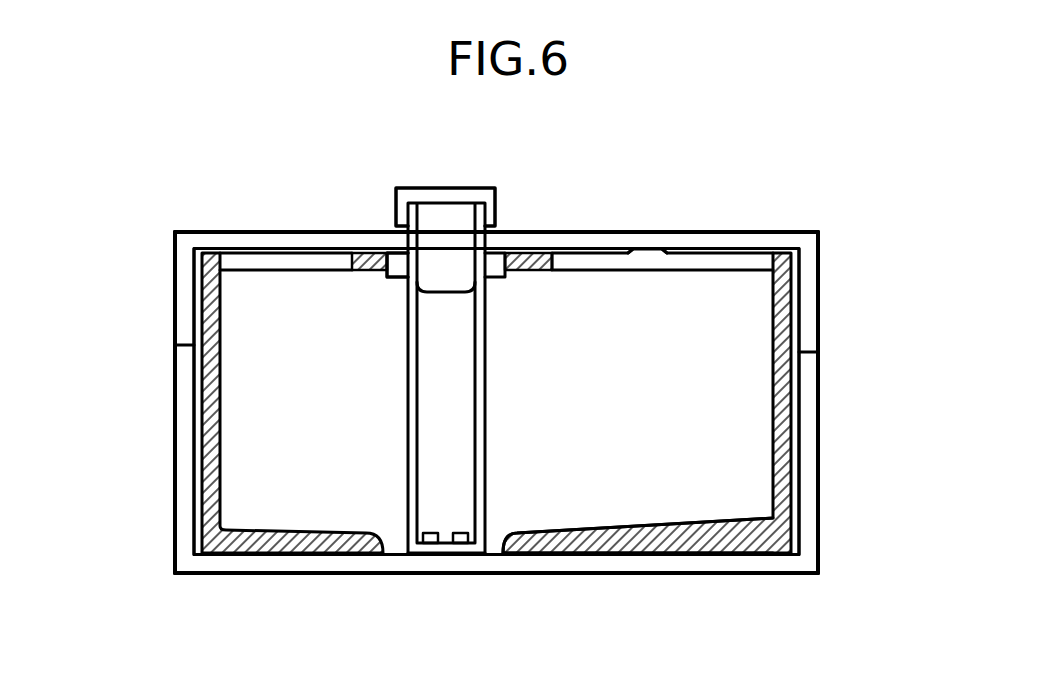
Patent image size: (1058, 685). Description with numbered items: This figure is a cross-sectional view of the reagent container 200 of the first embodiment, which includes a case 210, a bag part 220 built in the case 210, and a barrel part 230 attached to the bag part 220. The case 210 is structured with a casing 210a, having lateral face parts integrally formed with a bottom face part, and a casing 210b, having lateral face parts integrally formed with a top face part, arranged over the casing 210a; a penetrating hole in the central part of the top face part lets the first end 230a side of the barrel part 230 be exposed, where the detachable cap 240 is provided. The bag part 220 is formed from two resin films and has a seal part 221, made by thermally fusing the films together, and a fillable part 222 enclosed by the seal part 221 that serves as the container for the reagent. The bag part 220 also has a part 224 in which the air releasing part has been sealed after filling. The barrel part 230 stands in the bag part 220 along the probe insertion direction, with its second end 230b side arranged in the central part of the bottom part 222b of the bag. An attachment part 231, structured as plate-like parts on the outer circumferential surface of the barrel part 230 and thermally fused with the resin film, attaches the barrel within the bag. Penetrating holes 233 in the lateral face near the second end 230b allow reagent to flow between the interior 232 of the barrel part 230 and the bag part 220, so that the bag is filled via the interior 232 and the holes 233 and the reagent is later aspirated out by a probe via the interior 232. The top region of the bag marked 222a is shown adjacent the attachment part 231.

The reagent container 200 is at (146, 163).
The case 210 is at (170, 248).
The casing 210a is at (173, 393).
The casing 210b is at (173, 327).
The bag part 220 is at (797, 422).
The seal part 221 is at (793, 478).
The fillable part 222 is at (745, 500).
The liner top portion 222a is at (718, 262).
The bottom part 222b is at (536, 557).
The part in which the air releasing part is sealed 224 is at (648, 242).
The barrel part 230 is at (497, 380).
The first end 230a is at (400, 220).
The second end 230b is at (413, 552).
The attachment part 231 is at (367, 262).
The interior 232 is at (450, 320).
The penetrating holes 233 is at (460, 546).
The cap 240 is at (396, 192).